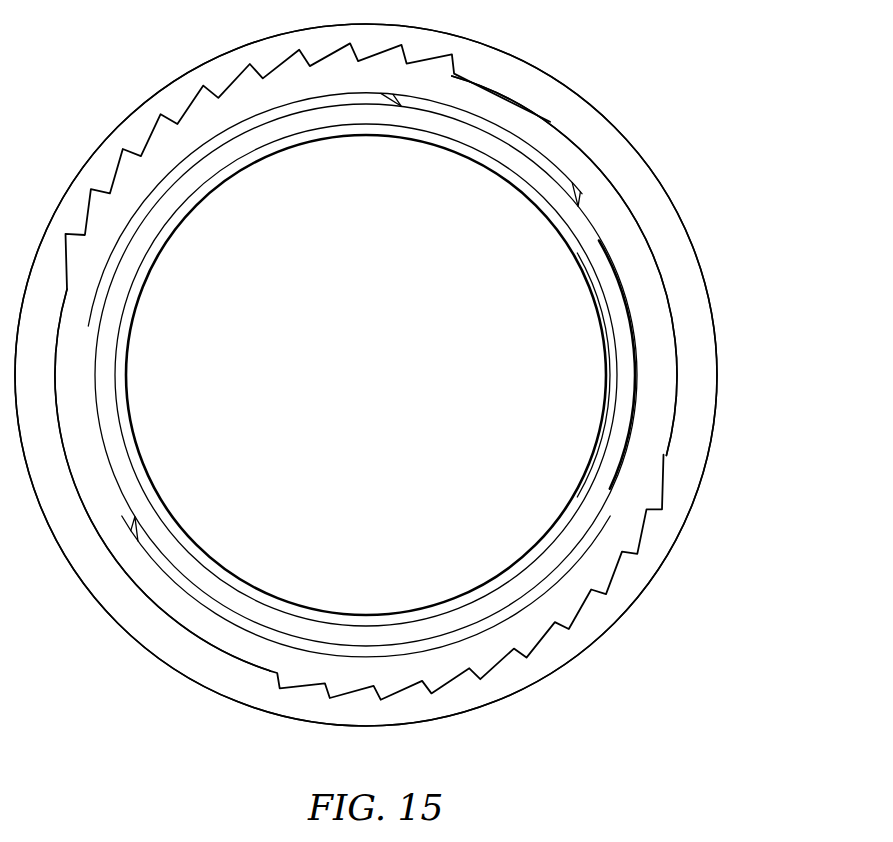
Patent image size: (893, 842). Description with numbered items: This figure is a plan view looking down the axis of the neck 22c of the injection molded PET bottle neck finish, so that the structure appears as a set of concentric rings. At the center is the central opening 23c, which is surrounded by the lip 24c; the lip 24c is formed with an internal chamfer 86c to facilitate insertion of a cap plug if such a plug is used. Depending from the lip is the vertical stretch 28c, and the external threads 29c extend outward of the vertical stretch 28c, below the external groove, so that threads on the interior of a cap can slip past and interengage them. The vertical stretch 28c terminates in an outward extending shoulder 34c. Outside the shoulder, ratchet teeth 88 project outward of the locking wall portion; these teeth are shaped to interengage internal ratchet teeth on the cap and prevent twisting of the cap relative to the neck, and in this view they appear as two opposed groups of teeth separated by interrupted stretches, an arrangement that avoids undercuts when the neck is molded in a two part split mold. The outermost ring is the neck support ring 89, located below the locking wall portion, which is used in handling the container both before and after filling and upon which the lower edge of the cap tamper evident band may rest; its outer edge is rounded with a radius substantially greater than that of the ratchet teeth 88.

The neck 22c is at (585, 82).
The neck support ring 89 is at (637, 162).
The vertical stretch 28c is at (635, 364).
The ratchet teeth 88 is at (157, 112).
The external threads 29c is at (488, 122).
The lip 24c is at (607, 263).
The internal chamfer 86c is at (414, 133).
The central opening 23c is at (535, 200).
The shoulder 34c is at (140, 574).